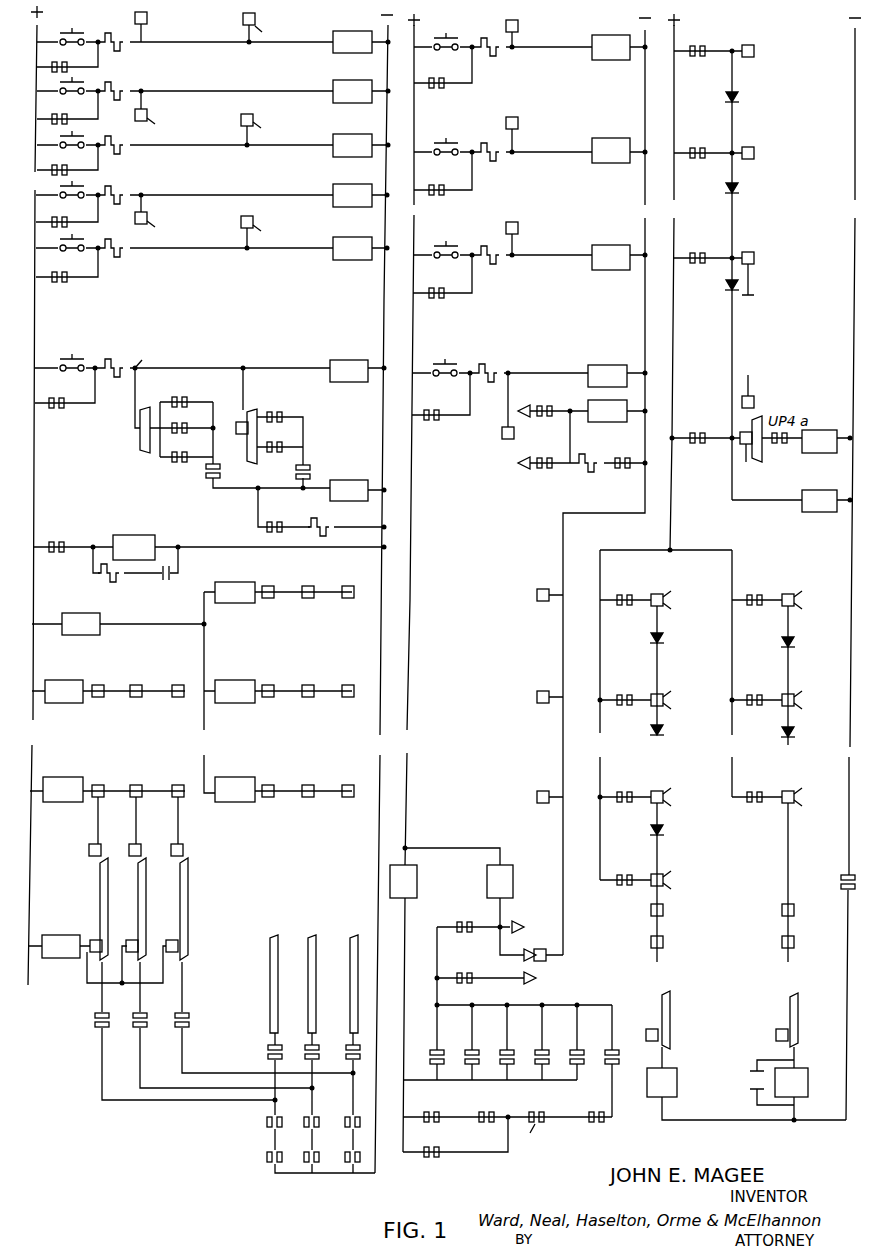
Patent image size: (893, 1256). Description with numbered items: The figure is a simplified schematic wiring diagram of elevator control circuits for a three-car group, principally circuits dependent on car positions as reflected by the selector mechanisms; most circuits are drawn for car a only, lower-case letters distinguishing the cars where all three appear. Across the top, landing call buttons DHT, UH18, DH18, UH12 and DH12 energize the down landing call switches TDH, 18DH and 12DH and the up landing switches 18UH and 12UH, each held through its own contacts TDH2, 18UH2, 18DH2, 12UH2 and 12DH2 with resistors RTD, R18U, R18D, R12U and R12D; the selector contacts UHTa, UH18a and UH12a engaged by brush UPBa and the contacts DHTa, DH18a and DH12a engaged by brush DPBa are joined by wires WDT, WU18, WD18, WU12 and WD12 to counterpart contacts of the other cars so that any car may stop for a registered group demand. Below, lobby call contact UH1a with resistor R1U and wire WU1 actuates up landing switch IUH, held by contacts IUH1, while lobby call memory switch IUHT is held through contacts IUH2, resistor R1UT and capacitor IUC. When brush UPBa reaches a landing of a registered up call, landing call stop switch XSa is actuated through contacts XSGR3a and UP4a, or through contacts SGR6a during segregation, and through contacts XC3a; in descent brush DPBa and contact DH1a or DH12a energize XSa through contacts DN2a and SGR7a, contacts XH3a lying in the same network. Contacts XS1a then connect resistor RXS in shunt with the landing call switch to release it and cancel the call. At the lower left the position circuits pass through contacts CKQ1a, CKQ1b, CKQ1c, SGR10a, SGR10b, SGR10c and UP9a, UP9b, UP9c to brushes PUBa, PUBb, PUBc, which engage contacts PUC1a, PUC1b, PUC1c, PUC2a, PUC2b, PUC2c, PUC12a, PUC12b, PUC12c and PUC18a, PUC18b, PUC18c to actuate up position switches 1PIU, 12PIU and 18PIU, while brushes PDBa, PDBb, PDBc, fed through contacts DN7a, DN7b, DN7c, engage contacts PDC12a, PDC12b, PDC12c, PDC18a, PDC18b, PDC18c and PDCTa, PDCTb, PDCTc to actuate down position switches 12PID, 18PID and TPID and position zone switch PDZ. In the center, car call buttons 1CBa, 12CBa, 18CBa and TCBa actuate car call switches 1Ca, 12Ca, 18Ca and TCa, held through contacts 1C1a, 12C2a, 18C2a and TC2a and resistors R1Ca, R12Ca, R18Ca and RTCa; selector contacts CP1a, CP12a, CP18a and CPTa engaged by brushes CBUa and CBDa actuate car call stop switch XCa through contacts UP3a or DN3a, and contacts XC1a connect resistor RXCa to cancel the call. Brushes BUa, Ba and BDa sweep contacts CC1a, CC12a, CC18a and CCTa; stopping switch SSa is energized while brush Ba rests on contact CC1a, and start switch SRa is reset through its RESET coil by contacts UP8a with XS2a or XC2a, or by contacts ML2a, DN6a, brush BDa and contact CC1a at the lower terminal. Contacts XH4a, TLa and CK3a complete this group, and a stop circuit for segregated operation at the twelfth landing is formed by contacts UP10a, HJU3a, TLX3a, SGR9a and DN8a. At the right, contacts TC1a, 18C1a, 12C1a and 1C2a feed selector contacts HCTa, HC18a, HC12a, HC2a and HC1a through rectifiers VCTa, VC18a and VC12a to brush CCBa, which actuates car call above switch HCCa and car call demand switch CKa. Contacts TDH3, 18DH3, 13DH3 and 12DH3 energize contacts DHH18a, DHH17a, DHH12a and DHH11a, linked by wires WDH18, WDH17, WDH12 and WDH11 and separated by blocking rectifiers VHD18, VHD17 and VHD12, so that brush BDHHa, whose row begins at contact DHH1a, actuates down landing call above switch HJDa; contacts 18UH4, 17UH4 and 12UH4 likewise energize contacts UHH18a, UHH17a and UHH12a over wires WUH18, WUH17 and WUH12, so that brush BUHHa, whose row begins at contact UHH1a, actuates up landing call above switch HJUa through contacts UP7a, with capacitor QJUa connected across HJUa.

The down landing call button DHT is at (84, 37).
The TDH switch contacts TDH2 is at (73, 59).
The resistor RTD is at (128, 50).
The up landing selector contact UHTa is at (159, 21).
The down landing selector contact DHTa is at (225, 22).
The WD wire WDT is at (274, 31).
The down landing call switch TDH is at (352, 42).
The up landing call button UH18 is at (84, 86).
The 18UH switch contacts 18UH2 is at (77, 111).
The resistor R18U is at (128, 86).
The up landing selector contact UH18a is at (165, 110).
The WU wire WU18 is at (168, 130).
The down landing selector contact DH18a is at (271, 112).
The WD wire WD18 is at (276, 132).
The up landing switch 18UH is at (352, 91).
The down landing call button DH18 is at (84, 140).
The 18DH switch contacts 18DH2 is at (77, 162).
The resistor R18D is at (128, 153).
The down landing call switch 18DH is at (352, 145).
The up landing call button UH12 is at (84, 190).
The 12UH switch contacts 12UH2 is at (77, 214).
The resistor R12U is at (128, 190).
The up landing selector contact UH12a is at (165, 213).
The WU wire WU12 is at (168, 233).
The down landing selector contact DH12a is at (271, 215).
The WD wire WD12 is at (276, 235).
The up landing switch 12UH is at (352, 195).
The down landing call button DH12 is at (84, 243).
The 12DH switch contacts 12DH2 is at (77, 269).
The resistor R12D is at (112, 258).
The down landing call switch 12DH is at (352, 248).
The up landing call contact UH1a is at (95, 394).
The resistor R1U is at (110, 358).
The WU wire WU1 is at (159, 356).
The up landing switch IUH is at (349, 371).
The IUH switch contacts IUH1 is at (62, 393).
The auxiliary segregation transfer switch contacts XSGR3a is at (180, 393).
The car call stop switch contacts XC3a is at (196, 420).
The up landing brush UPBa is at (140, 450).
The segregation switch contacts SGR6a is at (176, 462).
The up direction switch contacts UP4a is at (206, 475).
The down landing brush DPBa is at (250, 410).
The down landing selector contact DH1a is at (242, 436).
The reversal switch contacts XH3a is at (283, 412).
The down direction switch contacts DN2a is at (283, 442).
The segregation switch contacts SGR7a is at (310, 470).
The landing call stop switch XSa is at (349, 490).
The XSa switch contacts XS1a is at (282, 516).
The shunt resistor RXS is at (336, 521).
The IUH switch contacts IUH2 is at (55, 537).
The lobby call memory switch IUHT is at (134, 547).
The resistor R1UT is at (100, 575).
The capacitor IUC is at (165, 582).
The down position switch TPID is at (235, 592).
The down position selector contact PDCTa is at (280, 581).
The down position selector contact PDCTb is at (300, 602).
The down position selector contact PDCTc is at (345, 581).
The position zone switch PDZ is at (81, 624).
The up position switch 18PIU is at (64, 691).
The up position selector contact PUC18a is at (85, 678).
The up position selector contact PUC18b is at (134, 685).
The up position selector contact PUC18c is at (172, 678).
The down position switch 18PID is at (235, 691).
The down position selector contact PDC18a is at (277, 678).
The down position selector contact PDC18b is at (311, 703).
The down position selector contact PDC18c is at (342, 678).
The up position switch 12PIU is at (63, 789).
The up position selector contact PUC12a is at (95, 778).
The up position selector contact PUC12b is at (134, 785).
The up position selector contact PUC12c is at (174, 778).
The down position switch 12PID is at (235, 789).
The down position selector contact PDC12a is at (262, 778).
The down position selector contact PDC12b is at (306, 785).
The down position selector contact PDC12c is at (342, 778).
The up position selector contact PUC2a is at (89, 848).
The up position selector contact PUC2b is at (122, 833).
The up position selector contact PUC2c is at (164, 833).
The up position brush PUBa is at (81, 909).
The up position brush PUBb is at (128, 909).
The up position brush PUBc is at (205, 909).
The up position switch 1PIU is at (61, 946).
The up position selector contact PUC1a is at (93, 940).
The up position selector contact PUC1b is at (125, 928).
The up position selector contact PUC1c is at (164, 928).
The up direction switch contacts UP9a is at (95, 1018).
The up direction switch contacts UP9b is at (127, 1008).
The up direction switch contacts UP9c is at (189, 1020).
The down position brush PDBa is at (274, 935).
The down position brush PDBb is at (312, 935).
The down position brush PDBc is at (354, 935).
The down direction switch contacts DN7a is at (268, 1052).
The down direction switch contacts DN7b is at (300, 1035).
The down direction switch contacts DN7c is at (341, 1056).
The segregation switch contacts SGR10a is at (241, 1122).
The segregation switch contacts SGR10b is at (299, 1109).
The segregation switch contacts SGR10c is at (338, 1109).
The car call quota switch contacts CKQ1a is at (268, 1157).
The car call quota switch contacts CKQ1b is at (305, 1162).
The car call quota switch contacts CKQ1c is at (346, 1162).
The car call button TCBa is at (453, 32).
The TCa switch contacts TC2a is at (447, 74).
The resistor RTCa is at (500, 58).
The car call selector contact CPTa is at (518, 26).
The car call switch TCa is at (611, 47).
The car call button 18CBa is at (451, 137).
The 18Ca switch contacts 18C2a is at (444, 181).
The resistor R18Ca is at (506, 164).
The car call selector contact CP18a is at (518, 123).
The car call switch 18Ca is at (611, 150).
The car call button 12CBa is at (446, 239).
The 12Ca switch contacts 12C2a is at (442, 284).
The resistor R12Ca is at (505, 267).
The car call selector contact CP12a is at (518, 228).
The car call switch 12Ca is at (611, 257).
The car call button 1CBa is at (442, 357).
The 1Ca switch contacts 1C1a is at (441, 404).
The resistor R1Ca is at (495, 363).
The relay 1Ca is at (607, 376).
The car call selector contact CP1a is at (502, 436).
The up car call brush CBUa is at (528, 404).
The up direction switch contacts UP3a is at (556, 400).
The car call stop switch XCa is at (607, 411).
The down direction switch contacts DN3a is at (541, 449).
The down car call brush CBDa is at (529, 474).
The shunt resistor RXCa is at (596, 473).
The XCa switch contacts XC1a is at (612, 451).
The car position contact CCTa is at (537, 595).
The car position contact CC18a is at (537, 697).
The car position contact CC12a is at (537, 797).
The start switch SRa is at (403, 881).
The reset coil RESET is at (417, 875).
The stopping switch SSa is at (500, 881).
The up direction switch contacts UP8a is at (465, 918).
The up position brush BUa is at (527, 919).
The down direction switch contacts DN6a is at (469, 969).
The position brush Ba is at (518, 966).
The car position contact CC1a is at (544, 961).
The down position brush BDa is at (540, 987).
The XSa switch contacts XS2a is at (426, 1036).
The reversal switch contacts XH4a is at (461, 1036).
The XCa switch contacts XC2a is at (496, 1036).
The top landing mechanical contacts TLa is at (532, 1036).
The main landing mechanical contacts ML2a is at (566, 1036).
The car call demand switch contacts CK3a is at (602, 1036).
The up direction switch contacts UP10a is at (429, 1107).
The up landing call above switch contacts HJU3a is at (487, 1107).
The twelfth landing mechanical contacts TLX3a is at (539, 1132).
The segregation switch contacts SGR9a is at (576, 1107).
The down direction switch contacts DN8a is at (436, 1140).
The down landing call above contact DHH1a is at (648, 1033).
The down landing call above brush BDHHa is at (670, 1000).
The down landing call above switch HJDa is at (662, 1082).
The up landing call above brush BUHHa is at (790, 1005).
The up landing call above contact UHH1a is at (776, 1034).
The capacitor QJUa is at (748, 1080).
The up landing call above switch HJUa is at (791, 1082).
The TCa switch contacts TC1a is at (708, 41).
The car call above selector contact HCTa is at (754, 48).
The rectifier VCTa is at (751, 93).
The 18Ca switch contacts 18C1a is at (704, 143).
The car call above selector contact HC18a is at (754, 150).
The rectifier VC18a is at (739, 188).
The 12Ca switch contacts 12C1a is at (704, 248).
The car call above selector contact HC12a is at (754, 255).
The rectifier VC12a is at (726, 290).
The car call above selector contact HC2a is at (754, 400).
The 1Ca switch contacts 1C2a is at (702, 427).
The car call above selector contact HC1a is at (735, 463).
The car call above switch HCCa is at (796, 439).
The car call above brush CCBa is at (762, 458).
The car call demand switch CKa is at (819, 501).
The TDH switch contacts TDH3 is at (622, 590).
The down landing call above contact DHH18a is at (660, 588).
The WDH wire WDH18 is at (686, 623).
The blocking rectifier VHD18 is at (650, 638).
The 18DH switch contacts 18DH3 is at (627, 690).
The down landing call above contact DHH17a is at (684, 691).
The WDH wire WDH17 is at (686, 720).
The blocking rectifier VHD17 is at (650, 730).
The 13DH switch contacts 13DH3 is at (627, 787).
The down landing call above contact DHH12a is at (684, 788).
The WDH wire WDH12 is at (686, 817).
The blocking rectifier VHD12 is at (650, 830).
The 12DH switch contacts 12DH3 is at (624, 870).
The down landing call above contact DHH11a is at (668, 868).
The WDH wire WDH11 is at (686, 900).
The 18UH switch contacts 18UH4 is at (762, 590).
The up landing call above contact UHH18a is at (816, 591).
The WUH wire WUH18 is at (813, 631).
The 17UH switch contacts 17UH4 is at (757, 690).
The up landing call above contact UHH17a is at (816, 691).
The WUH wire WUH17 is at (813, 724).
The 12UH switch contacts 12UH4 is at (757, 787).
The up landing call above contact UHH12a is at (816, 860).
The WUH wire WUH12 is at (819, 817).
The up direction switch contacts UP7a is at (841, 880).